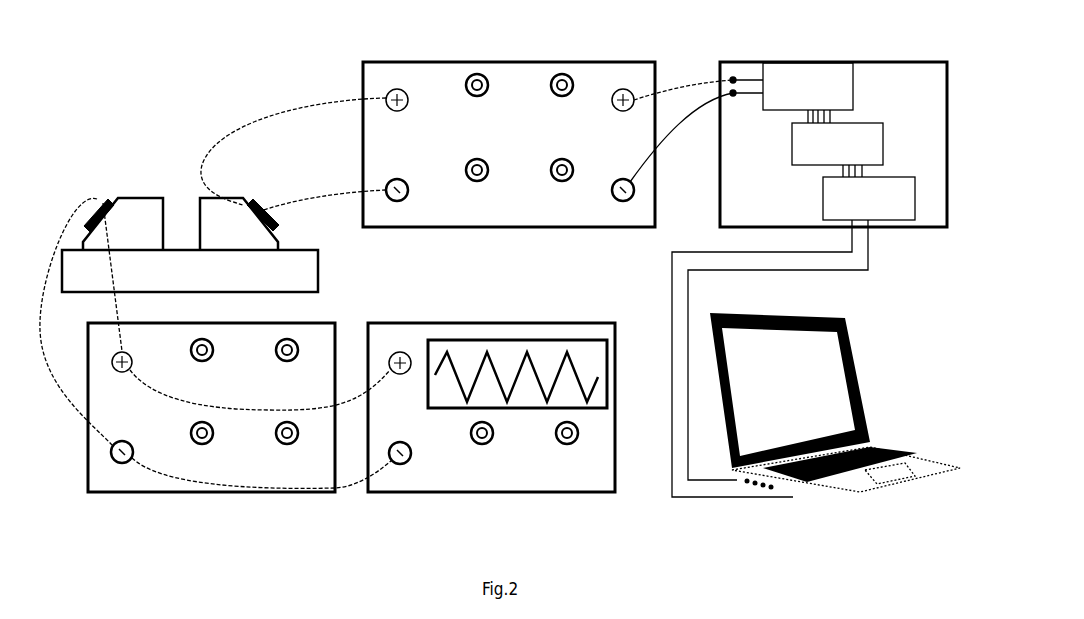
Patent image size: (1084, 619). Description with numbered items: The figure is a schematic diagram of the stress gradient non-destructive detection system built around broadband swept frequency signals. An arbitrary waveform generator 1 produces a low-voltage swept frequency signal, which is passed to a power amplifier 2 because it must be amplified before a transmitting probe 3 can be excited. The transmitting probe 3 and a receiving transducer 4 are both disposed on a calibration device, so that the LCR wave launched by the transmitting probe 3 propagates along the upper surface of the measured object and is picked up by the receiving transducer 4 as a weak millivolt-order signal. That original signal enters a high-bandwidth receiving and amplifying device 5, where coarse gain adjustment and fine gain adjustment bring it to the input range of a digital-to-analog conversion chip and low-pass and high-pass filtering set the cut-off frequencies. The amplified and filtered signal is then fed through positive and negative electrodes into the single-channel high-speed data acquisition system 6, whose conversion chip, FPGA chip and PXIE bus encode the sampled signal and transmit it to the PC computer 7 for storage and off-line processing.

The arbitrary waveform generator 1 is at (535, 335).
The power amplifier 2 is at (247, 350).
The transmitting probe 3 is at (104, 203).
The receiving transducer 4 is at (259, 206).
The high-bandwidth receiving and amplifying device 5 is at (443, 85).
The single-channel high-speed data acquisition system 6 is at (888, 87).
The PC computer 7 is at (832, 422).